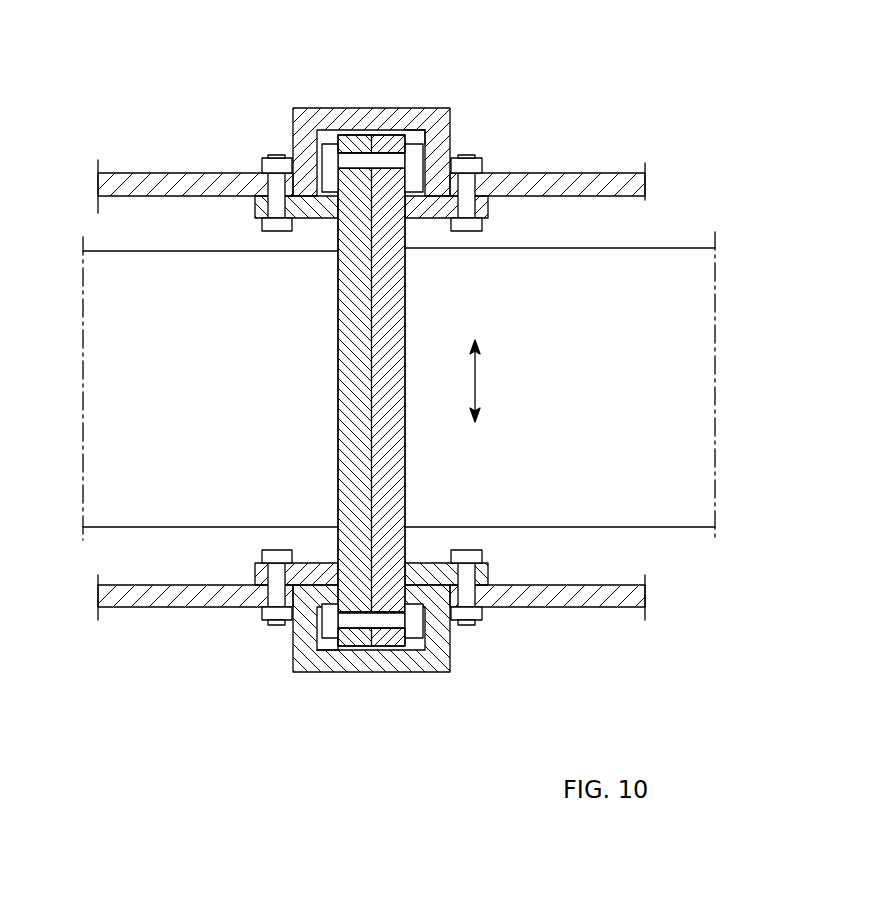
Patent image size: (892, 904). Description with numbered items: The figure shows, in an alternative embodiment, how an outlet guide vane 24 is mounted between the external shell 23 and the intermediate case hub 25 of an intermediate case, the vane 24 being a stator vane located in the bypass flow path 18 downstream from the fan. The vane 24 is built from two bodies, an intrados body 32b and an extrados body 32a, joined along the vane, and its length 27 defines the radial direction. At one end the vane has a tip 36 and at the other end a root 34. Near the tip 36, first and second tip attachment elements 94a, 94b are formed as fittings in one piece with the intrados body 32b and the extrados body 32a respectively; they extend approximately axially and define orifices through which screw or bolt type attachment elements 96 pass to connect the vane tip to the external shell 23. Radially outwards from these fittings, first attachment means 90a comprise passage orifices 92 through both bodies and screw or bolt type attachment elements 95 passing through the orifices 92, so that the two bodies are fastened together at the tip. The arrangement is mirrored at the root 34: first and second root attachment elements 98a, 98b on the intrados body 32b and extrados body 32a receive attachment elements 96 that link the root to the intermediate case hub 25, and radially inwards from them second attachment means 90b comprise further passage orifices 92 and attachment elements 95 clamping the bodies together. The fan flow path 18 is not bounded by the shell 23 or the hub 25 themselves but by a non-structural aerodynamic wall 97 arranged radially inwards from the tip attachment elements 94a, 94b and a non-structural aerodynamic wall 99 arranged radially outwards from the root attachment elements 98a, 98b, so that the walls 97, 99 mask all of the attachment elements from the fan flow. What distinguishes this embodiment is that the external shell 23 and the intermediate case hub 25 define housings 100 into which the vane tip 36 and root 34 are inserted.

The bypass flow path 18 is at (640, 395).
The external shell 23 is at (610, 187).
The outlet guide vane 24 is at (367, 390).
The intermediate case hub 25 is at (623, 602).
The length of the vane 27 is at (475, 382).
The extrados body 32a is at (388, 477).
The intrados body 32b is at (347, 477).
The root 34 is at (347, 642).
The tip 36 is at (403, 128).
The first attachment means 90a is at (417, 42).
The second attachment means 90b is at (442, 748).
The passage orifices 92 is at (388, 166).
The first tip attachment element 94a is at (313, 218).
The second tip attachment element 94b is at (425, 217).
The attachment elements 95 is at (330, 158).
The attachment elements 96 is at (277, 185).
The non-structural aerodynamic wall 97 is at (633, 250).
The first root attachment element 98a is at (312, 577).
The second root attachment element 98b is at (432, 578).
The non-structural aerodynamic wall 99 is at (665, 527).
The housings 100 is at (421, 133).